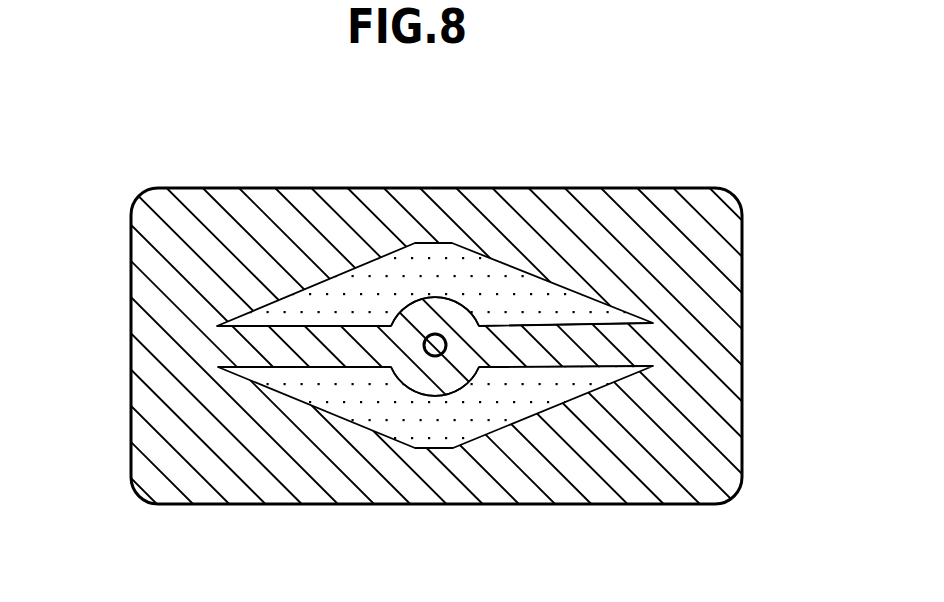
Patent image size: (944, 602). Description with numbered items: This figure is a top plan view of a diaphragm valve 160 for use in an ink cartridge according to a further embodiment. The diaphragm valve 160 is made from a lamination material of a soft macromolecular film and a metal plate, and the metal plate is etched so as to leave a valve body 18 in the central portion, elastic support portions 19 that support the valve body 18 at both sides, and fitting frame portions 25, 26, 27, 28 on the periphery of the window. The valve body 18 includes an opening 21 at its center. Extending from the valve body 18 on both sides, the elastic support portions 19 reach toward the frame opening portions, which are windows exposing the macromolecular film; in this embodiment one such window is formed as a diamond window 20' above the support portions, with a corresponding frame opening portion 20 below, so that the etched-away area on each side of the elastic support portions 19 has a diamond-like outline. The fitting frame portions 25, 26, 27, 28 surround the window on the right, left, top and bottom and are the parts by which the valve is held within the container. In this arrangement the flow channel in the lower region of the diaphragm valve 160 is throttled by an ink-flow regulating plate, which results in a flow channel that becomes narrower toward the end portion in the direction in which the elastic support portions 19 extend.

The diaphragm valve 160 is at (740, 169).
The valve body 18 is at (433, 295).
The elastic support portions 19 is at (310, 343).
The frame opening portion 20 is at (435, 467).
The diamond window 20' is at (435, 229).
The opening 21 is at (435, 357).
The fitting frame portion 25 is at (705, 262).
The fitting frame portion 26 is at (160, 268).
The fitting frame portion 27 is at (366, 202).
The fitting frame portion 28 is at (573, 504).